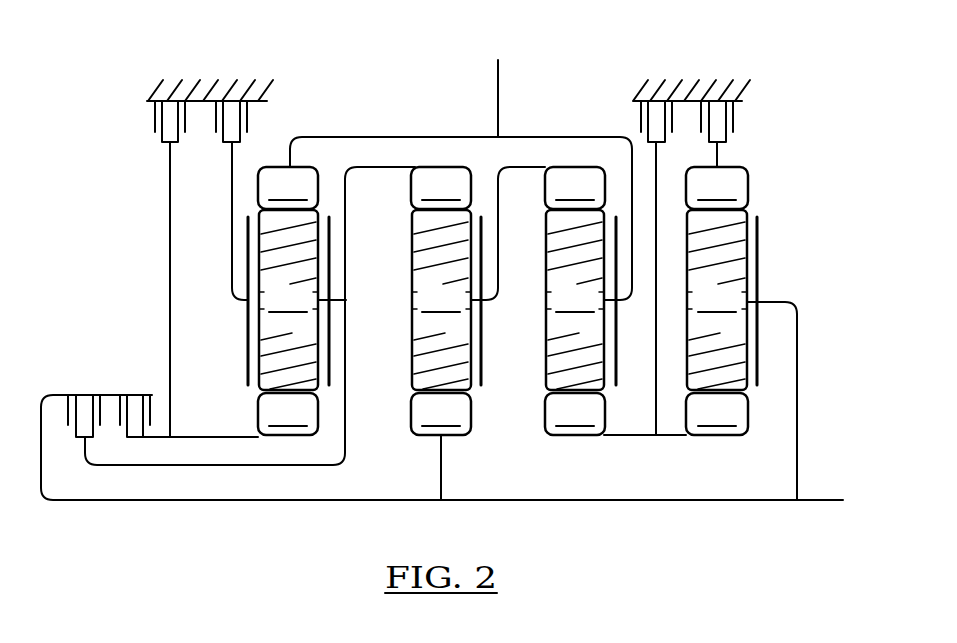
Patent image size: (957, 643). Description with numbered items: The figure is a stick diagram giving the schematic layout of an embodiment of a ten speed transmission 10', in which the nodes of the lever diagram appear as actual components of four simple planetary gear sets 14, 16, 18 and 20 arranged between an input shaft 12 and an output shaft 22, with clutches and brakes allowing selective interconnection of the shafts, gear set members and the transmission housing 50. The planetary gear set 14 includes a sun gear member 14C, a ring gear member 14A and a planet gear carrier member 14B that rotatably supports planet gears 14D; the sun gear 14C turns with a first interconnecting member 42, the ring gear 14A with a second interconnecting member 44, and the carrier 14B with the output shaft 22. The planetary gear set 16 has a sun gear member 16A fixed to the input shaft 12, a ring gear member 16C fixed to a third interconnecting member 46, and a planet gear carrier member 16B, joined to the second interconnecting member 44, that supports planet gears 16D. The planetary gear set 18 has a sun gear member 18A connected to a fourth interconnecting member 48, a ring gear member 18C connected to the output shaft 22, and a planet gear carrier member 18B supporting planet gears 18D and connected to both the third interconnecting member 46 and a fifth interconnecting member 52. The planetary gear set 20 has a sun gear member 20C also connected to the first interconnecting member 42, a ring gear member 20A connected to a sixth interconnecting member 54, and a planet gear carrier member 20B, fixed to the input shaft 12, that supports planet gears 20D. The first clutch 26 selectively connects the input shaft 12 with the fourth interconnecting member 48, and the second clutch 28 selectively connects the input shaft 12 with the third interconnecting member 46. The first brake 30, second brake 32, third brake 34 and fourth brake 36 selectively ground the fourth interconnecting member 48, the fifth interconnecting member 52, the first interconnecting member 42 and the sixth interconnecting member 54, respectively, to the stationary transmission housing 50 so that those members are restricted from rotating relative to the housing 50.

The ten speed transmission 10' is at (809, 38).
The input shaft 12 is at (92, 502).
The planetary gear set 14 is at (583, 331).
The ring gear member 14A is at (575, 188).
The planet gear carrier member 14B is at (616, 362).
The sun gear member 14C is at (575, 414).
The planet gears 14D is at (581, 300).
The planetary gear set 16 is at (458, 333).
The sun gear member 16A is at (441, 446).
The planet gear carrier member 16B is at (482, 330).
The ring gear member 16C is at (441, 188).
The planet gears 16D is at (446, 300).
The planetary gear set 18 is at (289, 361).
The sun gear member 18A is at (288, 414).
The planet gear carrier member 18B is at (331, 255).
The ring gear member 18C is at (288, 188).
The planet gears 18D is at (302, 300).
The planetary gear set 20 is at (759, 331).
The ring gear member 20A is at (717, 188).
The planet gear carrier member 20B is at (758, 262).
The sun gear member 20C is at (717, 414).
The planet gears 20D is at (717, 300).
The output shaft 22 is at (499, 110).
The first clutch 26 is at (152, 412).
The second clutch 28 is at (68, 405).
The first brake 30 is at (153, 112).
The second brake 32 is at (215, 118).
The third brake 34 is at (641, 118).
The fourth brake 36 is at (733, 118).
The first interconnecting member 42 is at (620, 438).
The second interconnecting member 44 is at (499, 245).
The third interconnecting member 46 is at (346, 345).
The fourth interconnecting member 48 is at (203, 437).
The transmission housing 50 is at (200, 88).
The fifth interconnecting member 52 is at (231, 205).
The sixth interconnecting member 54 is at (718, 157).